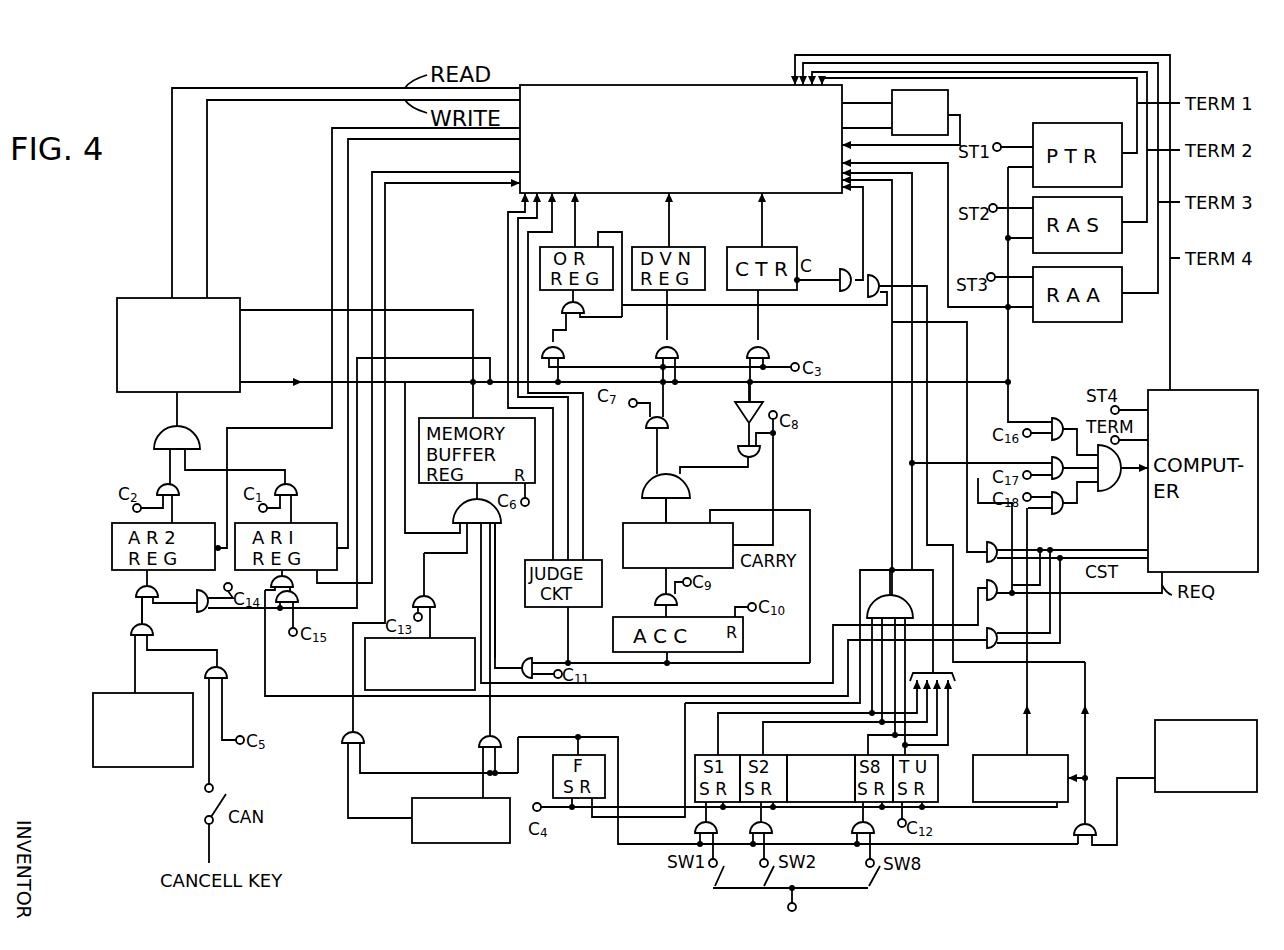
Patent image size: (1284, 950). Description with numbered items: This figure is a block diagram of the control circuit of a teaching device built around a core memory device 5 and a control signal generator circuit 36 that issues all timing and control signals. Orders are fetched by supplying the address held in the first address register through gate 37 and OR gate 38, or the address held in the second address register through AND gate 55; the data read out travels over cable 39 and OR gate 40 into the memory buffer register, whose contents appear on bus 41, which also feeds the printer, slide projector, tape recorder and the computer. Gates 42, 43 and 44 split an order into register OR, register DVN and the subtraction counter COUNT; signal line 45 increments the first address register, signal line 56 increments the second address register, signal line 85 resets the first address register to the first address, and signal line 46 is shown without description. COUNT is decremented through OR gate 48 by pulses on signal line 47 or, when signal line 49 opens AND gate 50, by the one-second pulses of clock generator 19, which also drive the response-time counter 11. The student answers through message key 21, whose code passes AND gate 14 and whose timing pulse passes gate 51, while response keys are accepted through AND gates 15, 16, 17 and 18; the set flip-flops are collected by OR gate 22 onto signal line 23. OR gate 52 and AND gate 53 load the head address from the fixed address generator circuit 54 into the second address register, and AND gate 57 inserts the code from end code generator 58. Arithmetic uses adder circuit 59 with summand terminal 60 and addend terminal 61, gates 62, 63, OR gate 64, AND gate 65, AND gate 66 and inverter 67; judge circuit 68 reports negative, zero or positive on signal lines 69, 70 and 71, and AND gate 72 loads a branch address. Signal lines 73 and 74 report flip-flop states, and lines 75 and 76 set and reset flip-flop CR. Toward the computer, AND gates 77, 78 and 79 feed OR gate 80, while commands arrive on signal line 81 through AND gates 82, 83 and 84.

The memory device 5 is at (132, 298).
The counter 11 is at (1003, 802).
The AND gate 14 is at (479, 738).
The AND gate 15 is at (694, 828).
The AND gate 16 is at (766, 826).
The AND gate 17 is at (852, 827).
The AND gate 18 is at (1085, 848).
The clock generator 19 is at (1178, 720).
The message key 21 is at (435, 845).
The OR gate 22 is at (884, 599).
The signal line 23 is at (893, 585).
The control signal generator circuit 36 is at (781, 167).
The gate 37 is at (296, 487).
The OR gate 38 is at (187, 417).
The cable 39 is at (262, 374).
The OR gate 40 is at (454, 506).
The bus 41 is at (470, 398).
The gate 42 is at (564, 347).
The gate 43 is at (679, 347).
The gate 44 is at (770, 347).
The signal line 45 is at (400, 141).
The line 46 is at (576, 218).
The signal line 47 is at (862, 220).
The OR gate 48 is at (844, 269).
The signal line 49 is at (800, 302).
The AND gate 50 is at (872, 272).
The gate 51 is at (365, 738).
The OR gate 52 is at (220, 667).
The AND gate 53 is at (153, 630).
The fixed address generator circuit 54 is at (110, 767).
The AND gate 55 is at (178, 487).
The signal line 56 is at (334, 132).
The AND gate 57 is at (420, 597).
The end code generator 58 is at (443, 638).
The adder circuit 59 is at (731, 568).
The input terminal 60 is at (706, 519).
The input terminal 61 is at (672, 514).
The AND gate 62 is at (198, 593).
The gate 63 is at (669, 425).
The OR gate 64 is at (674, 474).
The AND gate 65 is at (655, 602).
The AND gate 66 is at (525, 659).
The inverter 67 is at (758, 404).
The judge circuit 68 is at (570, 626).
The signal line 69 is at (553, 546).
The signal line 70 is at (569, 506).
The signal line 71 is at (583, 478).
The AND gate 72 is at (300, 595).
The signal line 73 is at (947, 190).
The signal line 74 is at (962, 118).
The signal line 75 is at (850, 103).
The signal line 76 is at (850, 128).
The AND gate 77 is at (1056, 418).
The gate 78 is at (1052, 460).
The AND gate 79 is at (1068, 514).
The OR gate 80 is at (1115, 492).
The signal line 81 is at (1098, 550).
The AND gate 82 is at (988, 546).
The AND gate 83 is at (987, 588).
The AND gate 84 is at (987, 631).
The signal line 85 is at (445, 175).